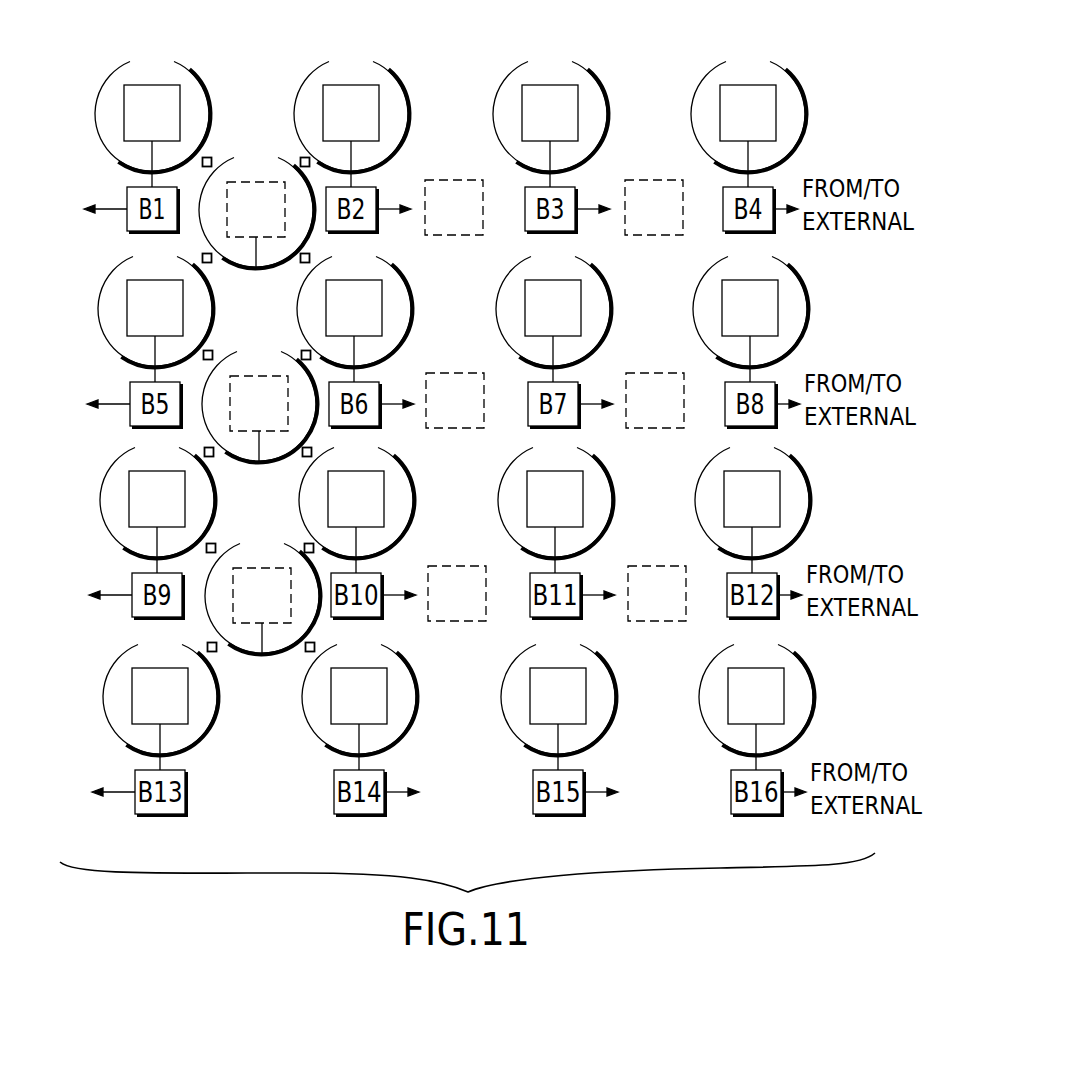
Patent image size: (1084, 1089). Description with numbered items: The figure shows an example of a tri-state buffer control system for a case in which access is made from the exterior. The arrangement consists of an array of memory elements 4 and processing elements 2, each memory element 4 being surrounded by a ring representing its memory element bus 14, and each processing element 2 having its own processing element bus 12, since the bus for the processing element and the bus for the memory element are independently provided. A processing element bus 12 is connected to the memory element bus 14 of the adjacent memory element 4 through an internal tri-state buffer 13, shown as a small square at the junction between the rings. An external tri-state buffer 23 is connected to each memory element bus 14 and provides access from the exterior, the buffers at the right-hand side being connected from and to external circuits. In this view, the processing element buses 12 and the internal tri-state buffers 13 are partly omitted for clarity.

The processing element 2 is at (450, 180).
The memory element 4 is at (153, 85).
The processing element bus 12 is at (275, 156).
The tri-state buffer 13 is at (209, 157).
The memory element bus 14 is at (105, 80).
The external tri-state buffer 23 is at (133, 189).